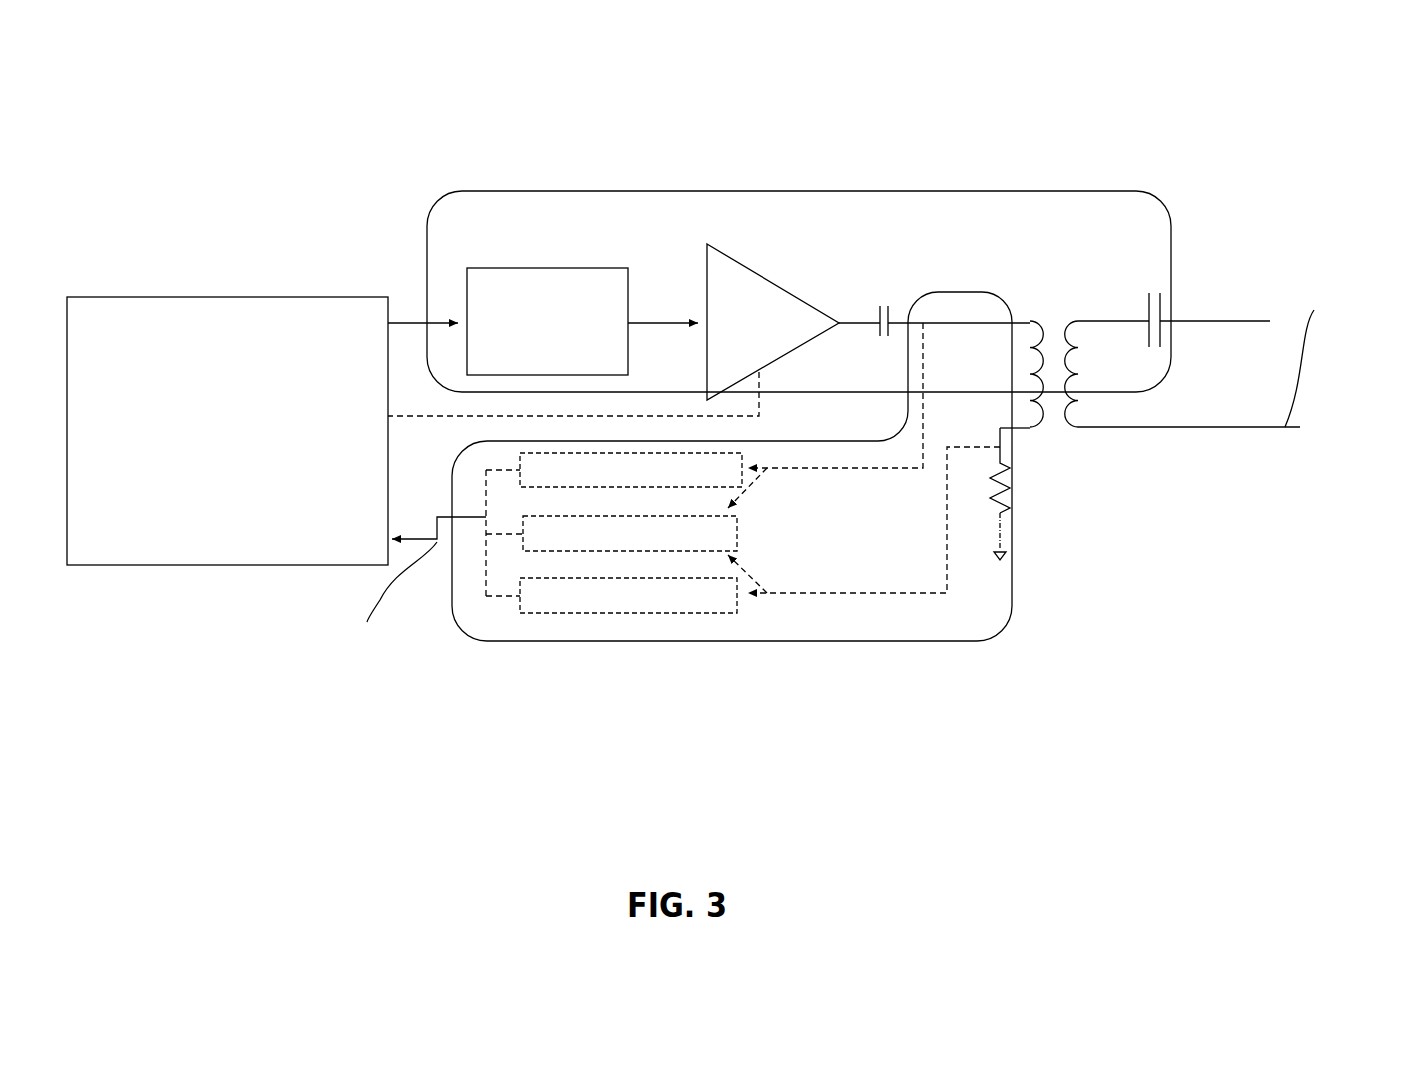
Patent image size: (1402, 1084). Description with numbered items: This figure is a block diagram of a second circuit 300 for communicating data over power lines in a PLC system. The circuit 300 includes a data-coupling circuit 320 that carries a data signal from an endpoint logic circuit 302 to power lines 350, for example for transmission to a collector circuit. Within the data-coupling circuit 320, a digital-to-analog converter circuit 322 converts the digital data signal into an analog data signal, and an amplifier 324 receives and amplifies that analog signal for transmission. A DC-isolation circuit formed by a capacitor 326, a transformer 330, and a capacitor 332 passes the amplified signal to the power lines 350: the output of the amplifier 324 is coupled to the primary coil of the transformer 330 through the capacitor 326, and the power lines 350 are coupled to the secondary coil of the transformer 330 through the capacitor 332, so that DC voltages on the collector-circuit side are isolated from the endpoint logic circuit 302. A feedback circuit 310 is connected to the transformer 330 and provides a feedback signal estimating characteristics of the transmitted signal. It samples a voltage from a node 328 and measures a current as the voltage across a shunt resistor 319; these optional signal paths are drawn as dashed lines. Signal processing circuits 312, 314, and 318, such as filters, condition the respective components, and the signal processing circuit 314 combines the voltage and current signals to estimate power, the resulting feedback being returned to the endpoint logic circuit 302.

The circuit 300 is at (1092, 155).
The endpoint logic circuit 302 is at (350, 297).
The feedback circuit 310 is at (882, 641).
The signal processing circuit 312 is at (637, 487).
The signal processing circuit 314 is at (652, 551).
The signal processing circuit 318 is at (650, 613).
The shunt resistor 319 is at (1003, 513).
The data-coupling circuit 320 is at (812, 191).
The digital-to-analog converter circuit 322 is at (595, 268).
The amplifier 324 is at (790, 283).
The capacitor 326 is at (893, 312).
The node 328 is at (935, 320).
The transformer 330 is at (1048, 306).
The capacitor 332 is at (1163, 305).
The power lines 350 is at (1270, 321).